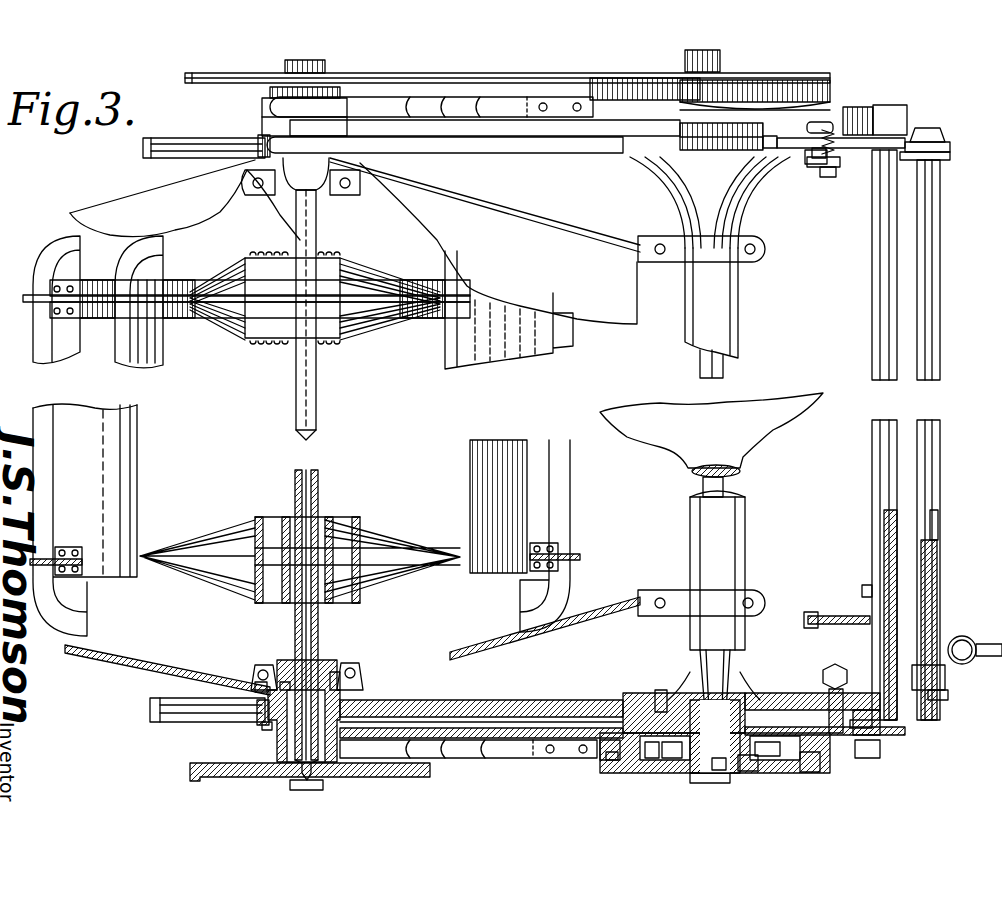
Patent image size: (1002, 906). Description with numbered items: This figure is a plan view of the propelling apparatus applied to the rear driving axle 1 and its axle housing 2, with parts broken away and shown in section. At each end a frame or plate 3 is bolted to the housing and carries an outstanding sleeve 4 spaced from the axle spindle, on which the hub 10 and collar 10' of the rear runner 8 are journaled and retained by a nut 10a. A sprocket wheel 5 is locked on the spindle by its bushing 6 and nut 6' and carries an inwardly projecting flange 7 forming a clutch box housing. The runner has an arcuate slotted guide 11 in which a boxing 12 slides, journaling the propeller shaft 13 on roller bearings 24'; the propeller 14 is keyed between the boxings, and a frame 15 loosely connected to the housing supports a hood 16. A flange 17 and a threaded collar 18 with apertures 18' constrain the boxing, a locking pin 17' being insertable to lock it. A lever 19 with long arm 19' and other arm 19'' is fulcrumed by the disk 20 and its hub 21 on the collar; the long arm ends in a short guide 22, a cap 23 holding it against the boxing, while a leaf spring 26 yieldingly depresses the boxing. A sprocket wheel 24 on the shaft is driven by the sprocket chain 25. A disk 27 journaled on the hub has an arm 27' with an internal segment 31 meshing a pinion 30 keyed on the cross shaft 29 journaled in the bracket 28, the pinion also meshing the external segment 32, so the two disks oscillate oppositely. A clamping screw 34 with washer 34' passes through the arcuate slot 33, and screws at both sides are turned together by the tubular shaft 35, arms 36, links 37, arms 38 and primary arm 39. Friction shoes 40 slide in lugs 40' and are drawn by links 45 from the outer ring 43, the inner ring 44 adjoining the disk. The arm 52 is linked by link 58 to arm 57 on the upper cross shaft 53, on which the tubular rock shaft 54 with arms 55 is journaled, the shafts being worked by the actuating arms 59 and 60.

The rear driving axle 1 is at (735, 486).
The axle housing 2 is at (738, 560).
The frame or plate 3 is at (690, 190).
The outstanding sleeve 4 is at (690, 700).
The sprocket wheel or driving member 5 is at (770, 78).
The bushing or boss 6 is at (480, 745).
The nut or securing member 6' is at (728, 785).
The annular marginal inwardly projecting flange 7 is at (655, 80).
The rear runner 8 is at (175, 140).
The hub 10 is at (731, 674).
The sleeve or collar 10' is at (765, 664).
The nut 10a is at (710, 793).
The arcuate slotted guide 11 is at (345, 190).
The journal box or boxing 12 is at (340, 678).
The propeller shaft 13 is at (318, 490).
The propelling or traction wheel 14 is at (56, 229).
The frame 15 is at (690, 238).
The hood or shield 16 is at (605, 318).
The annular or circumferential flange 17 is at (258, 424).
The locking pin or key 17' is at (242, 660).
The collar or annulus 18 is at (230, 440).
The apertures 18' is at (207, 743).
The lever 19 is at (485, 428).
The long arm 19' is at (445, 410).
The arm 19'' is at (827, 400).
The disk or plate 20 is at (700, 118).
The hub or bushing 21 is at (665, 700).
The short arcuate slotted guide 22 is at (258, 118).
The cap 23 is at (326, 76).
The sprocket wheel 24 is at (507, 430).
The roller bearings 24' is at (274, 659).
The sprocket chain 25 is at (520, 97).
The leaf spring 26 is at (445, 105).
The disk 27 is at (671, 411).
The arm 27' is at (894, 420).
The bracket or arm 28 is at (885, 130).
The cross shaft 29 is at (892, 546).
The pinion 30 is at (880, 120).
The internal segment 31 is at (895, 110).
The external segment 32 is at (870, 758).
The arcuate slot 33 is at (832, 118).
The clamping screw 34 is at (823, 419).
The washer 34' is at (861, 746).
The tubular shaft 35 is at (880, 486).
The arms 36 is at (880, 165).
The links 37 is at (848, 168).
The arms 38 is at (815, 172).
The primary arm 39 is at (870, 590).
The friction shoes 40 is at (698, 776).
The lugs or guides 40' is at (585, 782).
The ring or annulus 43 is at (670, 775).
The ring or annulus 44 is at (790, 770).
The links 45 is at (640, 775).
The arm 52 is at (778, 150).
The cross shaft 53 is at (930, 596).
The tubular rock shaft 54 is at (935, 522).
The arm 55 is at (950, 152).
The arm 57 is at (940, 140).
The link 58 is at (912, 158).
The actuating arm 59 is at (925, 650).
The actuating arm 60 is at (982, 648).